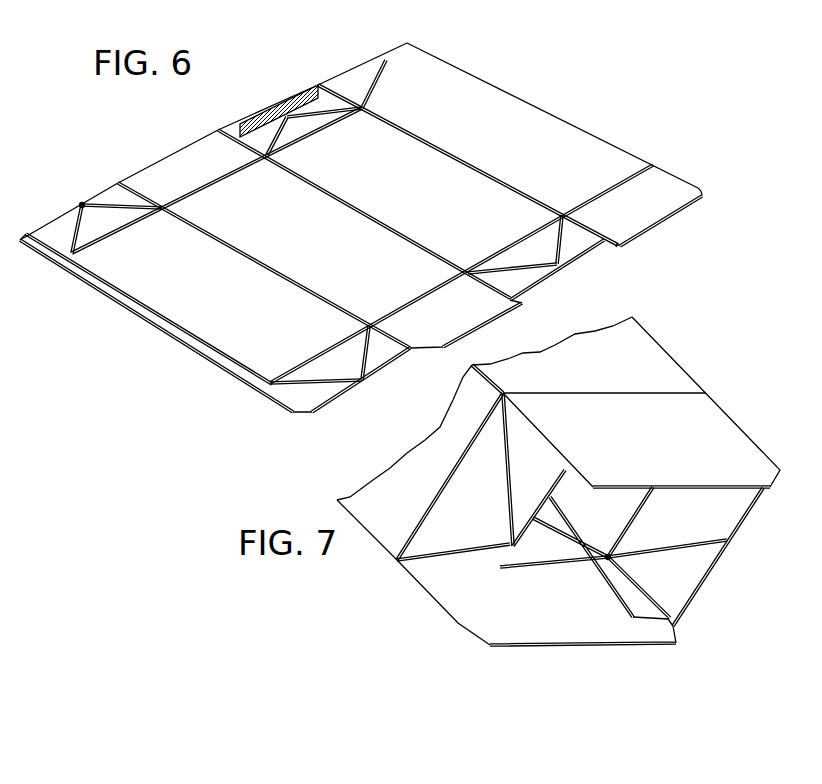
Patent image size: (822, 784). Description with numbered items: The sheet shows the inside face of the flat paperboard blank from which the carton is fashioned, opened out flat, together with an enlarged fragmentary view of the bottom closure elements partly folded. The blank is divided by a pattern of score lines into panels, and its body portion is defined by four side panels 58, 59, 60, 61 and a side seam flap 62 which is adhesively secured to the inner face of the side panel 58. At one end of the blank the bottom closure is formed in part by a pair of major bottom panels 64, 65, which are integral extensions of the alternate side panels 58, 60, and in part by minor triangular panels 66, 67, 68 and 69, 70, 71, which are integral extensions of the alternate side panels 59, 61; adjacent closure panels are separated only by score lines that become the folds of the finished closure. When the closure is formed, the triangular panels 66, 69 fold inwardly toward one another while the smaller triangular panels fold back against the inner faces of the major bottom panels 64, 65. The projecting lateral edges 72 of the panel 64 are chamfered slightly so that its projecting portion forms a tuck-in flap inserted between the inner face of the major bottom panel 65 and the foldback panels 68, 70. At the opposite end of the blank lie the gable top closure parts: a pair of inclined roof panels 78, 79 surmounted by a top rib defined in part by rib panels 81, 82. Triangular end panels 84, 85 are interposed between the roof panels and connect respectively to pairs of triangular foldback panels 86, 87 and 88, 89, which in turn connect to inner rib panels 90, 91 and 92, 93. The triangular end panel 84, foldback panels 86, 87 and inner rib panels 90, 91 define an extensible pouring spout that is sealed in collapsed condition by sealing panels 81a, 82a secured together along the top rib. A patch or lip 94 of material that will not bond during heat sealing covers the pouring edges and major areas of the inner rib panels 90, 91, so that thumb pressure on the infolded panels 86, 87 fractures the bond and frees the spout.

In FIG. 6, the side panel 58 is at (521, 110).
In FIG. 7, the side panel 58 is at (537, 557).
In FIG. 6, the side panel 59 is at (447, 167).
In FIG. 7, the side panel 59 is at (383, 482).
In FIG. 6, the side panel 60 is at (340, 210).
In FIG. 7, the side panel 60 is at (665, 358).
In FIG. 6, the side panel 61 is at (260, 275).
In FIG. 7, the side panel 61 is at (628, 517).
In FIG. 6, the side seam flap 62 is at (148, 317).
In FIG. 7, the side seam flap 62 is at (567, 527).
In FIG. 6, the major bottom panel 64 is at (660, 212).
In FIG. 7, the major bottom panel 64 is at (567, 637).
In FIG. 6, the major bottom panel 65 is at (487, 315).
In FIG. 7, the major bottom panel 65 is at (728, 425).
In FIG. 6, the minor triangular panel 66 is at (523, 245).
In FIG. 7, the minor triangular panel 66 is at (457, 482).
In FIG. 6, the minor triangular panel 67 is at (578, 248).
In FIG. 7, the minor triangular panel 67 is at (430, 587).
In FIG. 6, the minor triangular panel 68 is at (517, 282).
In FIG. 7, the minor triangular panel 68 is at (540, 450).
In FIG. 6, the minor triangular panel 69 is at (327, 358).
In FIG. 7, the minor triangular panel 69 is at (703, 533).
In FIG. 6, the minor triangular panel 70 is at (382, 363).
In FIG. 7, the minor triangular panel 70 is at (737, 510).
In FIG. 6, the minor triangular panel 71 is at (320, 397).
In FIG. 7, the minor triangular panel 71 is at (682, 587).
In FIG. 6, the projecting lateral edge 72 is at (702, 189).
In FIG. 7, the projecting lateral edge 72 is at (477, 638).
In FIG. 6, the inclined roof panel 78 is at (431, 63).
In FIG. 6, the inclined roof panel 79 is at (199, 183).
In FIG. 6, the rib panel 81 is at (352, 78).
In FIG. 6, the sealing panel 81a is at (367, 60).
In FIG. 6, the rib panel 82 is at (207, 147).
In FIG. 6, the sealing panel 82a is at (145, 167).
In FIG. 6, the triangular end panel 84 is at (316, 126).
In FIG. 6, the triangular end panel 85 is at (107, 232).
In FIG. 6, the triangular foldback panel 86 is at (362, 112).
In FIG. 6, the triangular foldback panel 87 is at (280, 142).
In FIG. 6, the triangular foldback panel 88 is at (138, 203).
In FIG. 6, the triangular foldback panel 89 is at (62, 243).
In FIG. 6, the inner rib panel 90 is at (318, 85).
In FIG. 6, the inner rib panel 91 is at (238, 126).
In FIG. 6, the inner rib panel 92 is at (102, 195).
In FIG. 6, the inner rib panel 93 is at (63, 213).
In FIG. 6, the patch of adhesive material 94 is at (290, 101).